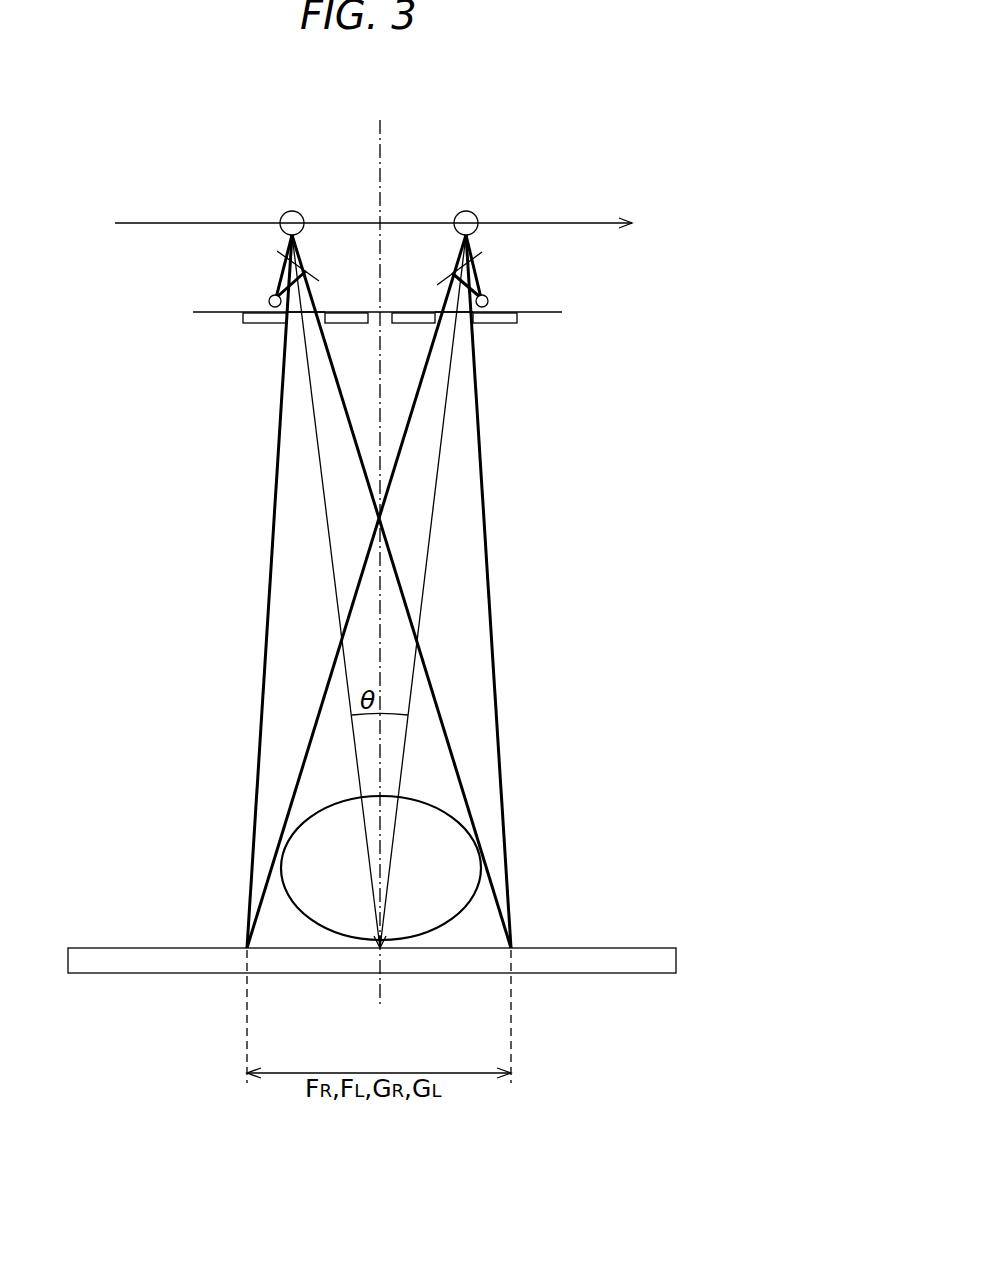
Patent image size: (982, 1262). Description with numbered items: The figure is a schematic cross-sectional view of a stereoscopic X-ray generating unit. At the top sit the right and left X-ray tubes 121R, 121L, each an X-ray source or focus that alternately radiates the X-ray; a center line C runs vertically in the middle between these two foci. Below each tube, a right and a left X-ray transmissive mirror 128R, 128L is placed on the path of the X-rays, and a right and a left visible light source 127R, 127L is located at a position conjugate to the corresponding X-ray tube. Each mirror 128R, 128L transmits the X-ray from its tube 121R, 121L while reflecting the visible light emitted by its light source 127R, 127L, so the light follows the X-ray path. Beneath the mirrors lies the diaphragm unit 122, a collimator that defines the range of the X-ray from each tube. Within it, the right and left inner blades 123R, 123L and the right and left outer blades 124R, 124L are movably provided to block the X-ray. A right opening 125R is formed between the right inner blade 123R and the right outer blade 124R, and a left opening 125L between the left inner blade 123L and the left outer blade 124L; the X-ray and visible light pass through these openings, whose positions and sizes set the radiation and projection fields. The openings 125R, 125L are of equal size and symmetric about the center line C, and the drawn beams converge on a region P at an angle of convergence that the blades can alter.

The left X-ray tube 121L is at (293, 211).
The right X-ray tube 121R is at (462, 211).
The diaphragm unit 122 is at (382, 382).
The left inner blade 123L is at (343, 323).
The right inner blade 123R is at (410, 323).
The left outer blade 124L is at (265, 323).
The right outer blade 124R is at (492, 323).
The left opening 125L is at (296, 324).
The right opening 125R is at (458, 323).
The left visible light source 127L is at (268, 300).
The right visible light source 127R is at (488, 300).
The left X-ray transmissive mirror 128L is at (318, 282).
The right X-ray transmissive mirror 128R is at (473, 260).
The center line C is at (382, 190).
The pattern region P is at (437, 803).